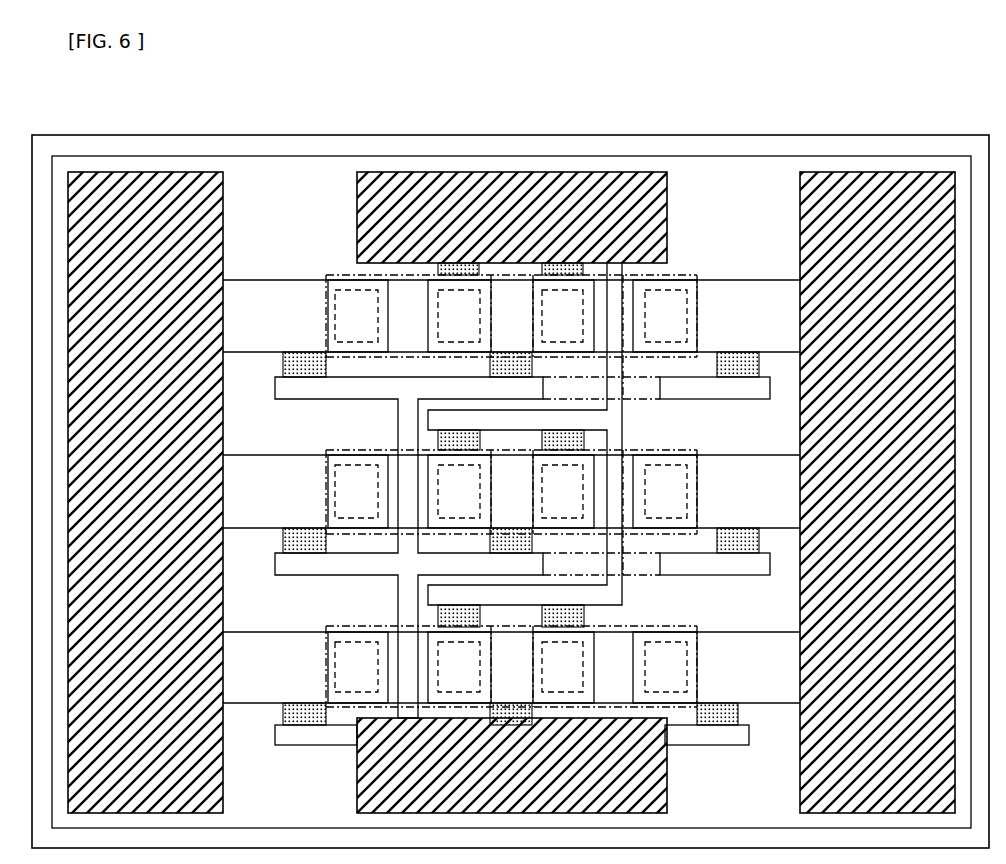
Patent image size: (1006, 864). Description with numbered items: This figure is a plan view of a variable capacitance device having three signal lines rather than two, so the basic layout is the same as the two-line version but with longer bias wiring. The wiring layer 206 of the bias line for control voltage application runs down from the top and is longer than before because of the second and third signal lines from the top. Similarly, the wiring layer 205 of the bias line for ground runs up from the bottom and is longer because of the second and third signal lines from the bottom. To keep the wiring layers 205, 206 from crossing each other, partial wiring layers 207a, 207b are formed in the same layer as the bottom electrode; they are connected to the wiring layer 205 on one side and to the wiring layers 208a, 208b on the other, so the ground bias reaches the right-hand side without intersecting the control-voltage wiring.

The wiring layer of the bias line for ground 205 is at (333, 400).
The wiring layer of the bias line for control voltage application 206 is at (626, 597).
The partial wiring layer 207a is at (649, 400).
The partial wiring layer 207b is at (649, 576).
The wiring layer 208a is at (733, 400).
The wiring layer 208b is at (733, 576).